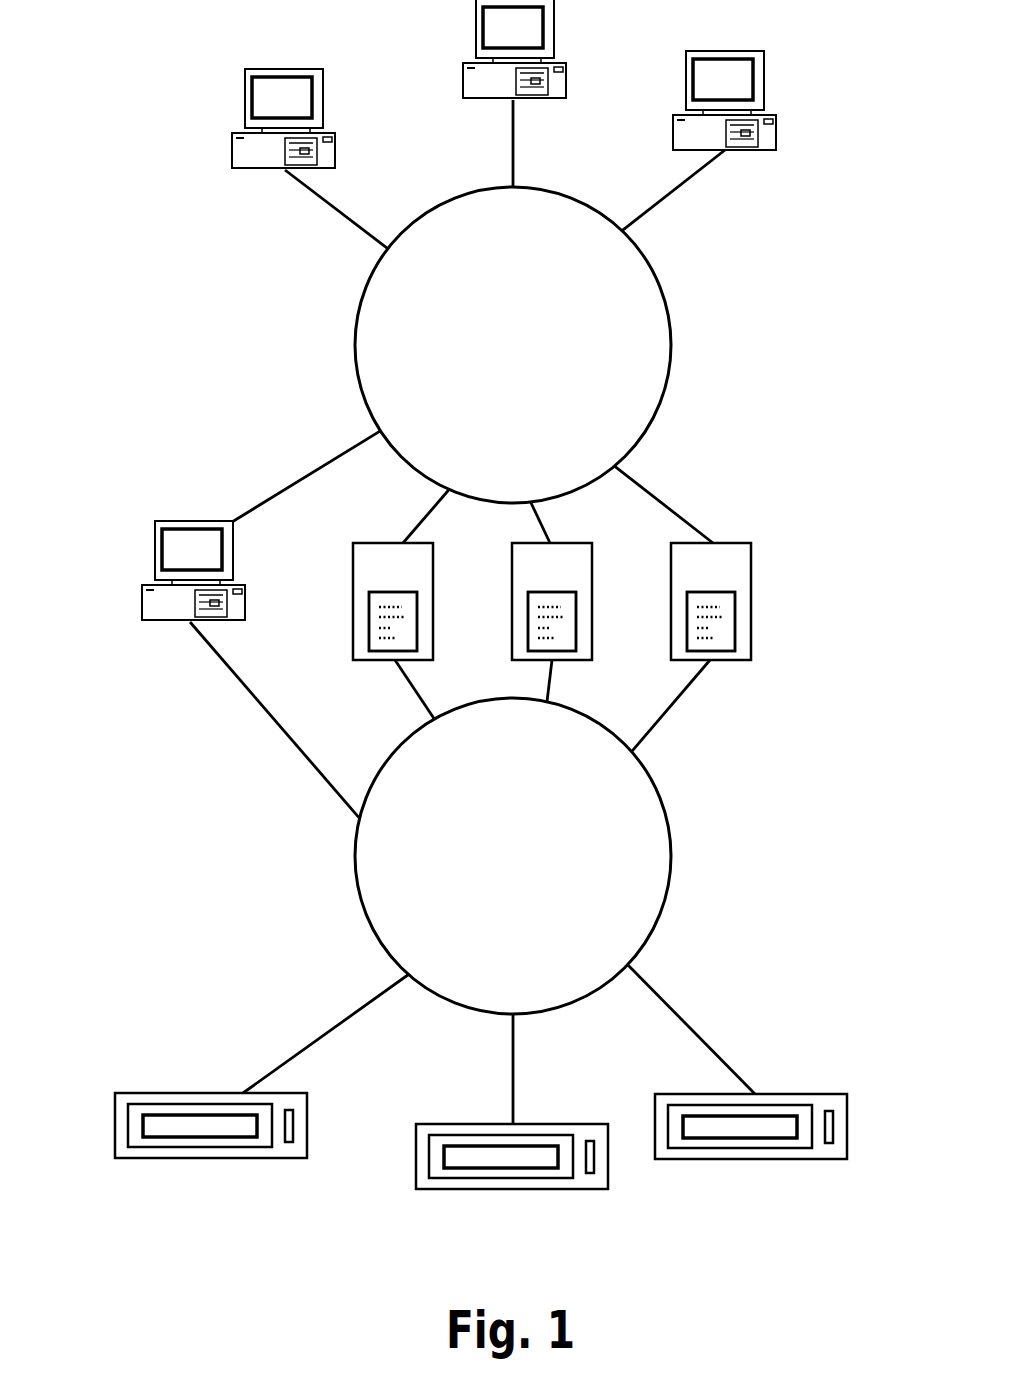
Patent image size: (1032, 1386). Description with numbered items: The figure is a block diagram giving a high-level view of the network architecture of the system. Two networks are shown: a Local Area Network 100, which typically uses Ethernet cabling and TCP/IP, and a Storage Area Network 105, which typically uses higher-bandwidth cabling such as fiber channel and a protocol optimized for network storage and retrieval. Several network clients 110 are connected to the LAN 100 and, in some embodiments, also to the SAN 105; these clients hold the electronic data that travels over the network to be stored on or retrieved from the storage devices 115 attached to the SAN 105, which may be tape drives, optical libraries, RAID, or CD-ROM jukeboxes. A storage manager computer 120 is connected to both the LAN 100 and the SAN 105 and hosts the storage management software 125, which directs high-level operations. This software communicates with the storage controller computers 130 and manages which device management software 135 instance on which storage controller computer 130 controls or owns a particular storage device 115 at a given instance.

The Local Area Network 100 is at (672, 343).
The Storage Area Network 105 is at (672, 855).
The network client 110 is at (335, 133).
The storage device 115 is at (225, 1158).
The storage manager computer 120 is at (512, 575).
The storage management software 125 is at (528, 628).
The storage controller computer 130 is at (353, 582).
The device management software 135 is at (369, 630).